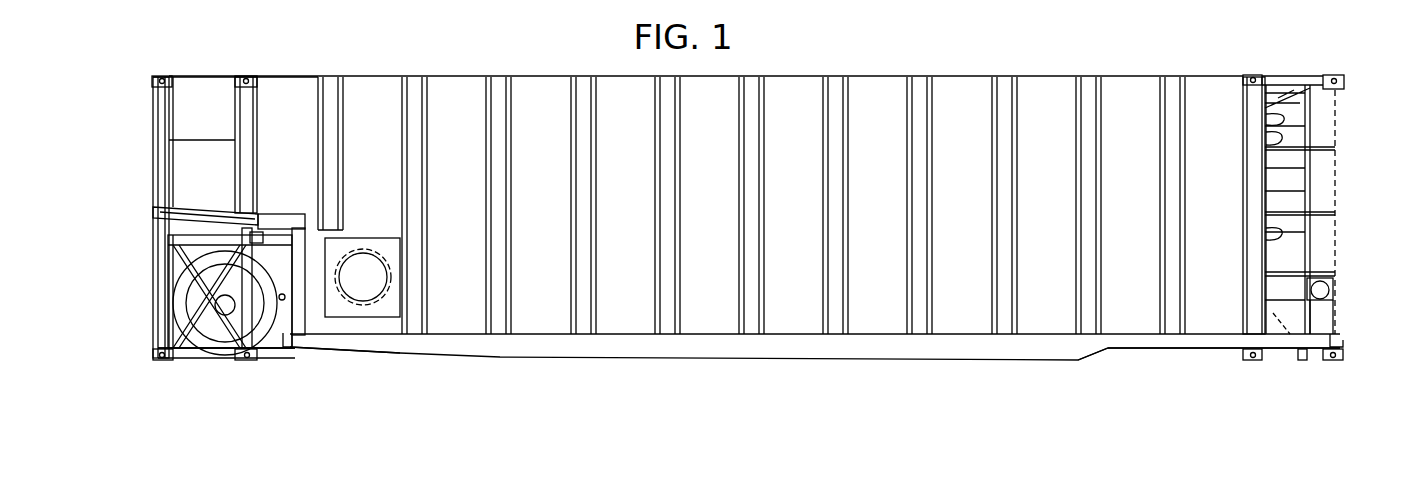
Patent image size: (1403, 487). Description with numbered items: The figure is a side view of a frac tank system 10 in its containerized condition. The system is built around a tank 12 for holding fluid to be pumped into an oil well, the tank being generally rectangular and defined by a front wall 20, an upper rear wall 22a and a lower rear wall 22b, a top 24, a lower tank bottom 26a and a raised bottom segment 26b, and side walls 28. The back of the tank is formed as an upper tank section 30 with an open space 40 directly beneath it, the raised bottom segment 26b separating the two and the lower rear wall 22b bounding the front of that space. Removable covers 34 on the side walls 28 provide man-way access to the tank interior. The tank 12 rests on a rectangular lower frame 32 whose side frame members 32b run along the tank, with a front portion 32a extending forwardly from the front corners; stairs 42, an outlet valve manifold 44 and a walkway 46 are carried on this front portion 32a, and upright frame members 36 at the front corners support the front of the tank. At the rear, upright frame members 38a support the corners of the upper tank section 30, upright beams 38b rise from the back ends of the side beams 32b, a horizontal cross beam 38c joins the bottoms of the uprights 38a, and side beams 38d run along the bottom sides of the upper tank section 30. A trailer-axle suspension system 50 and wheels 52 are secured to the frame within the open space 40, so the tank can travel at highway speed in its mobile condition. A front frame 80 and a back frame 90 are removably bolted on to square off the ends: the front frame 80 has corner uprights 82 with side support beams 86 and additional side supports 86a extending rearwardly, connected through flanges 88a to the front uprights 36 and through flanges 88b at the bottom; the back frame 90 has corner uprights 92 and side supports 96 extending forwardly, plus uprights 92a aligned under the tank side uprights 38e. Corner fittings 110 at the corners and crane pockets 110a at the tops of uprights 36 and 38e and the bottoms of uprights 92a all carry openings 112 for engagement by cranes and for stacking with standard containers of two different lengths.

The frac tank system 10 is at (786, 77).
The tank 12 is at (964, 75).
The front wall 20 is at (1250, 172).
The upper rear wall 22a is at (190, 143).
The lower rear wall 22b is at (322, 214).
The top 24 is at (530, 75).
The lower tank bottom 26a is at (303, 347).
The raised bottom segment 26b is at (197, 212).
The side walls 28 is at (642, 195).
The upper tank section 30 is at (283, 107).
The lower frame 32 is at (692, 360).
The front portion of the lower frame 32a is at (1330, 290).
The side frame members 32b is at (1110, 350).
The removable covers 34 is at (350, 291).
The upright frame members 36 is at (1252, 256).
The upright frame members 38a is at (160, 137).
The upright beams 38b is at (300, 300).
The horizontal cross beam 38c is at (158, 213).
The side beams 38d is at (280, 216).
The uprights 38e is at (240, 137).
The open space 40 is at (280, 263).
The stairs 42 is at (1312, 202).
The outlet valve manifold 44 is at (1335, 274).
The walkway 46 is at (1260, 312).
The trailer-axle suspension system 50 is at (213, 310).
The wheels 52 is at (176, 308).
The front frame 80 is at (1307, 76).
The uprights 82 is at (1346, 100).
The side support beams 86 is at (1268, 98).
The additional side supports 86a is at (1338, 148).
The flanges 88a is at (1272, 122).
The flanges 88b is at (1338, 345).
The back frame 90 is at (218, 352).
The uprights 92 is at (170, 252).
The uprights 92a is at (243, 210).
The side supports 96 is at (194, 356).
The corner fittings 110 is at (163, 74).
The crane pockets 110a is at (245, 75).
The openings 112 is at (152, 80).